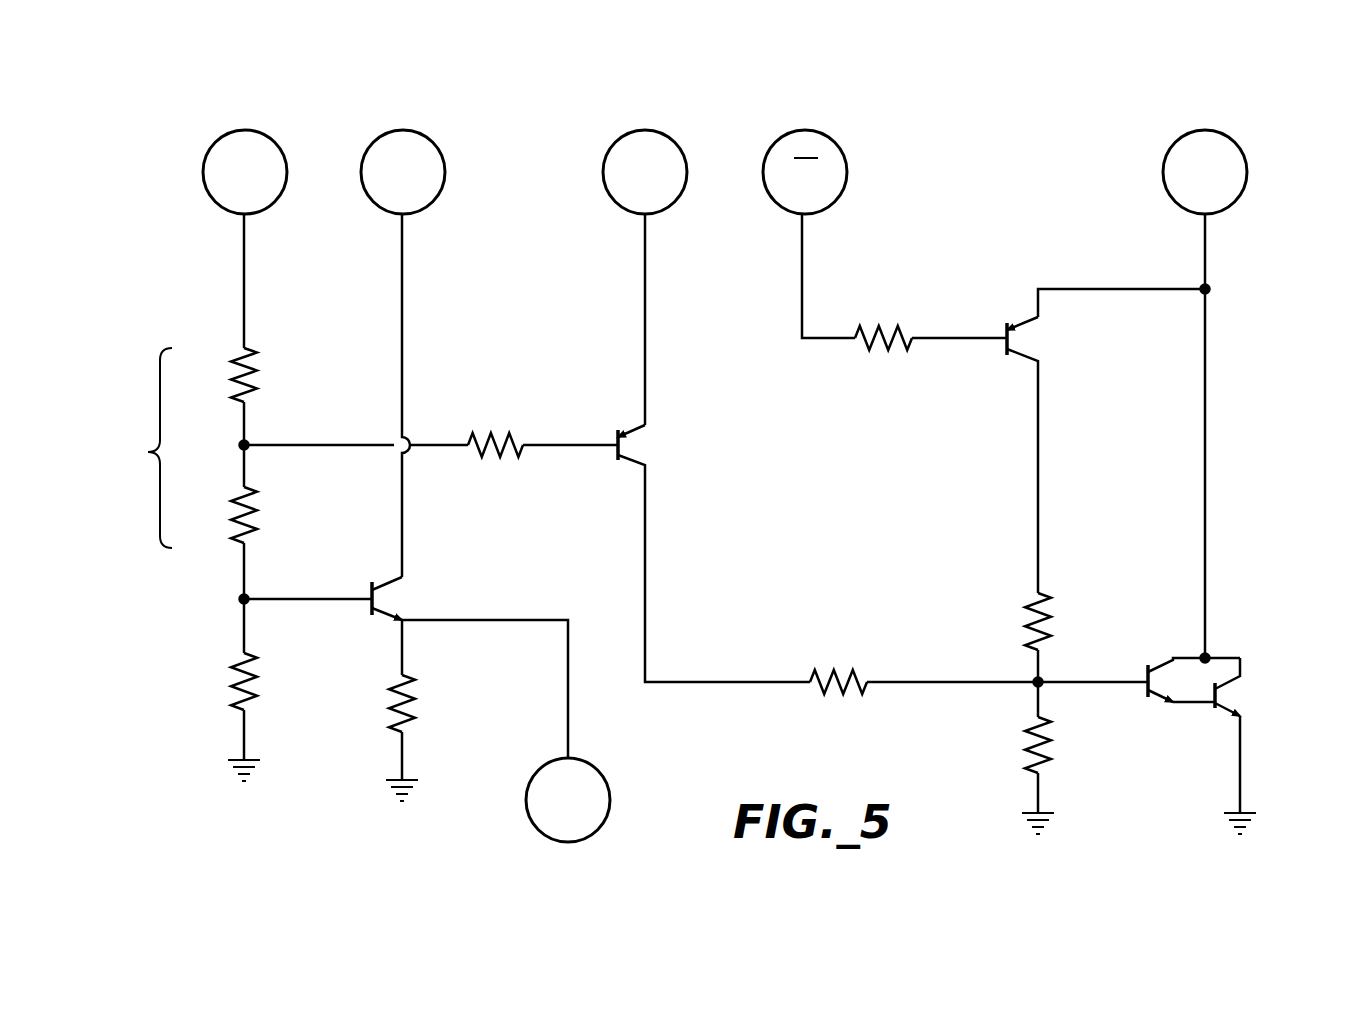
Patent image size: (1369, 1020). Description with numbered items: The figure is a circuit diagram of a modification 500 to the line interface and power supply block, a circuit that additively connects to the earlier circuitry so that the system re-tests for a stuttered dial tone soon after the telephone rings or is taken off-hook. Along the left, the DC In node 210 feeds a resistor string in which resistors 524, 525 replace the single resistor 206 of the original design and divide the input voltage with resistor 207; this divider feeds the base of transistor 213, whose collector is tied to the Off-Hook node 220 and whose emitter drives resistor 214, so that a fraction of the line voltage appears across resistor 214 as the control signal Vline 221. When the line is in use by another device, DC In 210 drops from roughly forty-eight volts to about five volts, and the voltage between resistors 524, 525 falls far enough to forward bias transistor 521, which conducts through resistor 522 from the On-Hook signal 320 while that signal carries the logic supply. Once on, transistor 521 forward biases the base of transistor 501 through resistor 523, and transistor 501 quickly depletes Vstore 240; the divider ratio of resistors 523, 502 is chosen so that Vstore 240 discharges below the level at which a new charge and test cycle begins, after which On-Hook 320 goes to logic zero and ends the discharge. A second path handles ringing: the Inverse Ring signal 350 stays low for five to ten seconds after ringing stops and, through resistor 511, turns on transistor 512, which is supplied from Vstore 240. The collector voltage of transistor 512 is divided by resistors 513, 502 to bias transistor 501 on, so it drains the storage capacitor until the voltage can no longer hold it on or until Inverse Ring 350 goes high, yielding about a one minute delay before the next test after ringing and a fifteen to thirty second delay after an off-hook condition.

The line interface and power supply circuit modification 500 is at (651, 41).
The DC In 210 is at (275, 142).
The Off-Hook signal 220 is at (434, 142).
The On-Hook signal 320 is at (676, 142).
The Inverse Ring signal 350 is at (836, 142).
The Vstore 240 is at (1236, 142).
The Vline control signal 221 is at (600, 776).
The resistor 206 is at (218, 448).
The resistor 524 is at (258, 392).
The resistor 525 is at (258, 530).
The resistor 207 is at (258, 690).
The transistor 213 is at (370, 586).
The resistor 214 is at (412, 694).
The resistor 522 is at (492, 460).
The transistor 521 is at (614, 458).
The resistor 523 is at (830, 694).
The resistor 511 is at (876, 358).
The transistor 512 is at (1002, 355).
The resistor 513 is at (1052, 620).
The resistor 502 is at (1052, 765).
The transistor 501 is at (1210, 708).